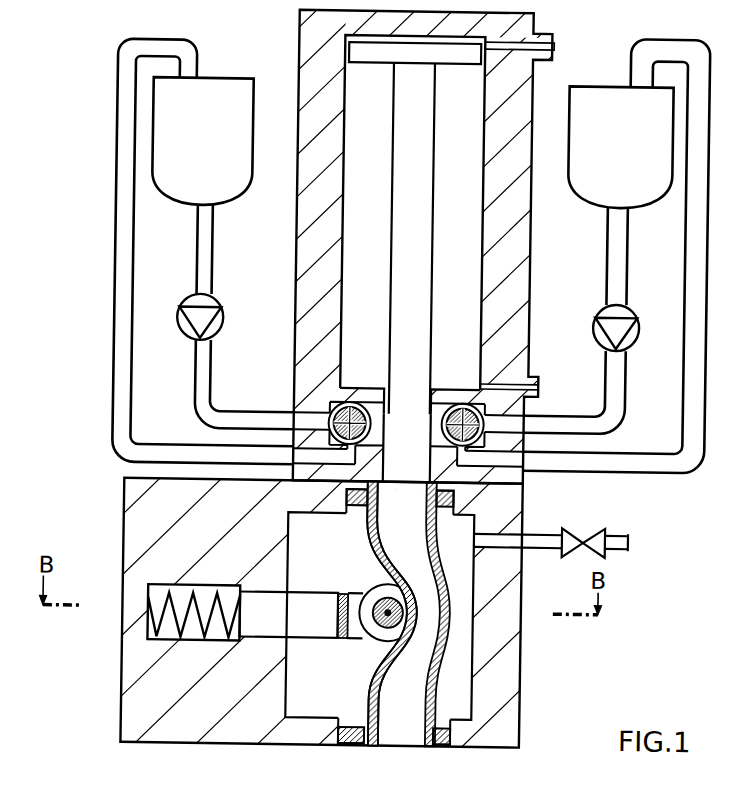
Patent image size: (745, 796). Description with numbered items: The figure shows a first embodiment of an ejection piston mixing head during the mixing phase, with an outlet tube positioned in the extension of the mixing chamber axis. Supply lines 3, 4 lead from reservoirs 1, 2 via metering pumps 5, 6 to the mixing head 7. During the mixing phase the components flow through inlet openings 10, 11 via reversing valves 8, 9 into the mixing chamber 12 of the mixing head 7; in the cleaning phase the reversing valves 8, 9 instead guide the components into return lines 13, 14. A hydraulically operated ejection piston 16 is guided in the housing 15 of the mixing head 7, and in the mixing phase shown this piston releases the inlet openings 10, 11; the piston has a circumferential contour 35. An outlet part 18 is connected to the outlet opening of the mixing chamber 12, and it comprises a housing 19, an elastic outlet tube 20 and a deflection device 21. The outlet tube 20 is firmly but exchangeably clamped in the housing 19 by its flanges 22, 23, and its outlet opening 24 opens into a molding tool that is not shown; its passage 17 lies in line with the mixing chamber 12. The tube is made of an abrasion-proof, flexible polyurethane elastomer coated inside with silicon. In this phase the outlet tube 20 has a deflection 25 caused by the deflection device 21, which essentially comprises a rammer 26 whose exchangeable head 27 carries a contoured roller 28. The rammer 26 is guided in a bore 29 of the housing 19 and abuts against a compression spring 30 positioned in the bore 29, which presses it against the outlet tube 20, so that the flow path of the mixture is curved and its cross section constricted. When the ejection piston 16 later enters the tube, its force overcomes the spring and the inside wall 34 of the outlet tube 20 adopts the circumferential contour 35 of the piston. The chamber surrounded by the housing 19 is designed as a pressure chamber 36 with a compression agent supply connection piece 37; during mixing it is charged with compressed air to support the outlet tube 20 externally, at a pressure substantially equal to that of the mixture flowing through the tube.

The reservoir 1 is at (234, 140).
The reservoir 2 is at (581, 136).
The supply line 3 is at (195, 271).
The supply line 4 is at (625, 269).
The metering pump 5 is at (189, 336).
The metering pump 6 is at (627, 335).
The mixing head 7 is at (294, 51).
The reversing valve 8 is at (335, 410).
The reversing valve 9 is at (541, 404).
The inlet opening 10 is at (389, 397).
The inlet opening 11 is at (425, 397).
The mixing chamber 12 is at (415, 472).
The return line 13 is at (127, 399).
The return line 14 is at (690, 405).
The housing 15 is at (307, 240).
The ejection piston 16 is at (389, 272).
The passage 17 is at (405, 491).
The outlet part 18 is at (126, 560).
The housing 19 is at (133, 725).
The outlet tube 20 is at (375, 698).
The deflection device 21 is at (304, 590).
The flange 22 is at (360, 497).
The flange 23 is at (358, 750).
The outlet opening 24 is at (394, 752).
The deflection 25 is at (455, 606).
The rammer 26 is at (295, 617).
The head 27 is at (343, 642).
The roller 28 is at (375, 590).
The bore 29 is at (155, 649).
The compression spring 30 is at (153, 607).
The inside wall 34 is at (421, 713).
The circumferential contour 35 is at (431, 325).
The pressure chamber 36 is at (472, 549).
The compression agent supply connection piece 37 is at (553, 535).